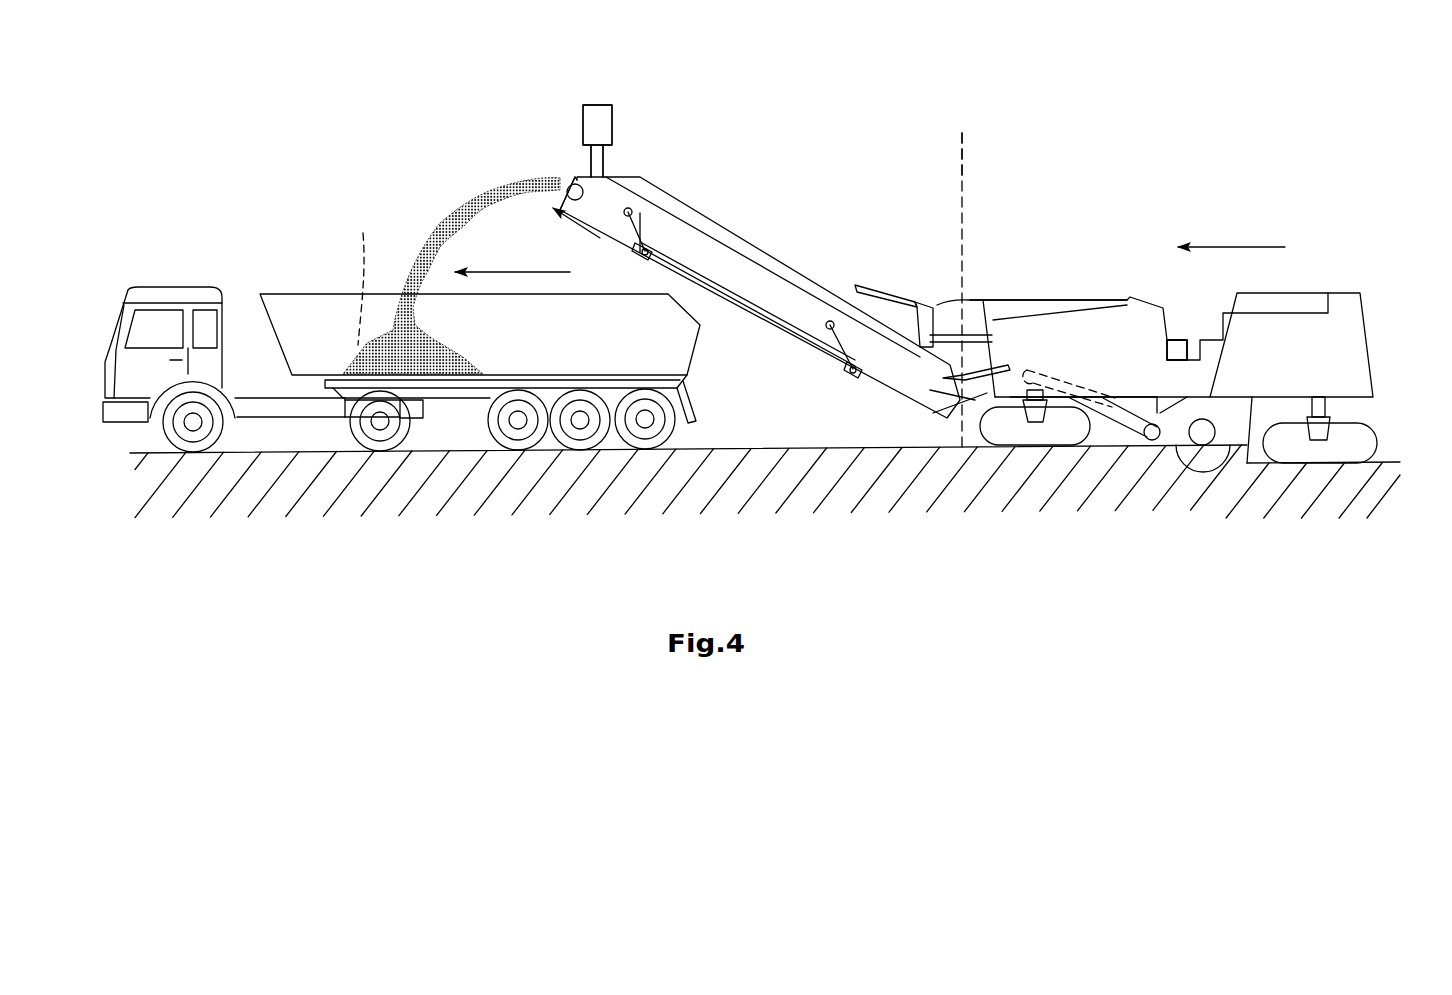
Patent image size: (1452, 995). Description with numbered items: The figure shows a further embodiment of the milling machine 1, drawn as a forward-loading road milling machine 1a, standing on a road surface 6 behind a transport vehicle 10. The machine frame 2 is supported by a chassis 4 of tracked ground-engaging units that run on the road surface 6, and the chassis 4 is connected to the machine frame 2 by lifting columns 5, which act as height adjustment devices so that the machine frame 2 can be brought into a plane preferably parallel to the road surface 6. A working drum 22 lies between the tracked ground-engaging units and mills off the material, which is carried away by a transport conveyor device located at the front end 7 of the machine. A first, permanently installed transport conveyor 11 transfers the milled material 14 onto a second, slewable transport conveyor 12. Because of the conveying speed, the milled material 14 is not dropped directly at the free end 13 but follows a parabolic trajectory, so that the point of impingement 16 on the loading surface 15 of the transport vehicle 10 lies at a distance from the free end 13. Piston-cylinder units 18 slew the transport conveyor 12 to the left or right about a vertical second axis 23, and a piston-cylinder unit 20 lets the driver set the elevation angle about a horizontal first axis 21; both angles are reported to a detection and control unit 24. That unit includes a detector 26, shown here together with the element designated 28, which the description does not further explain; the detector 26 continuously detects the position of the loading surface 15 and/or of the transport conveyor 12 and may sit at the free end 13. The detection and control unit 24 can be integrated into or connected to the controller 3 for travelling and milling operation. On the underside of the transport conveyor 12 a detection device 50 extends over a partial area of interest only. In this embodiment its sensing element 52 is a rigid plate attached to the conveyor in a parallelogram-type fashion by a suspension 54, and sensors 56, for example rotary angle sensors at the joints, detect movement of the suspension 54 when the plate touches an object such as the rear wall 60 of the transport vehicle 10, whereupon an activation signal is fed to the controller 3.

The milling machine 1 is at (1109, 276).
The forward-loading road milling machine 1a is at (1098, 360).
The machine frame 2 is at (1043, 298).
The controller 3 is at (1177, 347).
The detection and control unit 24 is at (1177, 347).
The chassis 4 is at (1388, 432).
The lifting columns 5 is at (1320, 403).
The road surface 6 is at (780, 442).
The front end 7 is at (951, 270).
The transport vehicle 10 is at (333, 248).
The first transport conveyor 11 is at (1118, 402).
The transport conveyor 12 is at (751, 236).
The free end 13 is at (596, 224).
The milled material 14 is at (423, 247).
The loading surface 15 is at (534, 372).
The point of impingement 16 is at (355, 279).
The piston-cylinder units 18 is at (990, 337).
The piston-cylinder unit 20 is at (884, 288).
The horizontal first axis 21 is at (956, 412).
The working drum 22 is at (1200, 452).
The vertical second axis 23 is at (963, 172).
The detector 26 is at (597, 114).
The sensor housing 28 is at (597, 114).
The detection device 50 is at (754, 335).
The sensing element 52 is at (827, 363).
The suspension 54 is at (634, 212).
The sensors 56 is at (646, 251).
The rear wall 60 is at (703, 323).